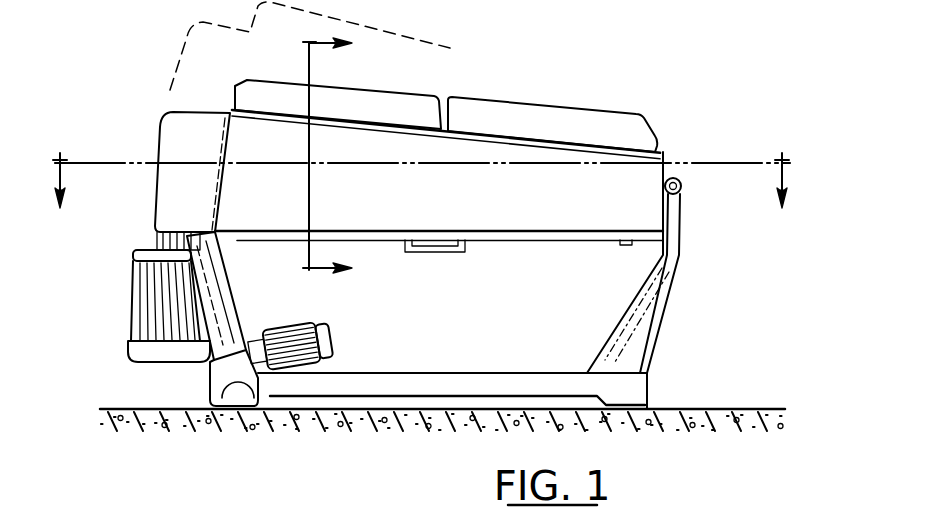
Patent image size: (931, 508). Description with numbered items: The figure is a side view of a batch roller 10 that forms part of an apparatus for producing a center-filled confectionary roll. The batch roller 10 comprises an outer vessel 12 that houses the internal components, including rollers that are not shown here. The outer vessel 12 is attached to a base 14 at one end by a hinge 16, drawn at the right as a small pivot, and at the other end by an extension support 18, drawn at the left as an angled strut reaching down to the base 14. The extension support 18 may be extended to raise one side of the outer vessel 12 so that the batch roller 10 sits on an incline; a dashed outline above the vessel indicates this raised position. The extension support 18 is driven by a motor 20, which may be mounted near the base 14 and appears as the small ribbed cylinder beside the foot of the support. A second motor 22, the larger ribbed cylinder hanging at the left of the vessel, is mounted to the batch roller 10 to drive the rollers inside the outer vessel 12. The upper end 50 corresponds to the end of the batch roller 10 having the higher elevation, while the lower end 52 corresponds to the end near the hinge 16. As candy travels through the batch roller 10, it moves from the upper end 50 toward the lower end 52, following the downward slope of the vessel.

The batch roller 10 is at (420, 215).
The outer vessel 12 is at (663, 155).
The base 14 is at (648, 388).
The hinge 16 is at (681, 188).
The extension support 18 is at (232, 303).
The motor 20 is at (328, 334).
The motor 22 is at (125, 306).
The upper end 50 is at (268, 82).
The lower end 52 is at (600, 110).